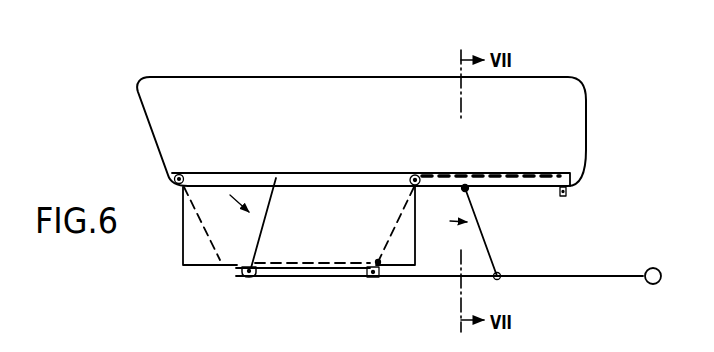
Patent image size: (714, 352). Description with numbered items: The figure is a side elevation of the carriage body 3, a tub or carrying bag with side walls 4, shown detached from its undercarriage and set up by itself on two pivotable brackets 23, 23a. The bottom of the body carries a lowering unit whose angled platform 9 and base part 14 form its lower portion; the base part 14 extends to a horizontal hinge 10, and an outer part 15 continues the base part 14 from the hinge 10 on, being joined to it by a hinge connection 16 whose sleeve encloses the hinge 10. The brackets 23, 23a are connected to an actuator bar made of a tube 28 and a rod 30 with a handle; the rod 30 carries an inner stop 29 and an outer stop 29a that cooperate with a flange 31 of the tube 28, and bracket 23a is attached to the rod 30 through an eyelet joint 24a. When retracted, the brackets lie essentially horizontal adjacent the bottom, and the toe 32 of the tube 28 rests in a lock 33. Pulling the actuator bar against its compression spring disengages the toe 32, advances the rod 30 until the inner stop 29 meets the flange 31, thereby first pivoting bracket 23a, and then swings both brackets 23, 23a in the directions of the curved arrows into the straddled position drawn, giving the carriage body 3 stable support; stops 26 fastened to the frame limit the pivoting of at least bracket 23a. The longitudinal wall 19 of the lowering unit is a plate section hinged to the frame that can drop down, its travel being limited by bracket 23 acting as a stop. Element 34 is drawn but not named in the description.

The carriage body 3 is at (358, 99).
The side walls 4 is at (351, 141).
The angled platform 9 is at (240, 262).
The horizontal hinge 10 is at (313, 226).
The base part 14 is at (390, 250).
The outer part 15 is at (540, 178).
The hinge connection 16 is at (422, 184).
The longitudinal wall 19 is at (336, 228).
The bracket 23 is at (254, 272).
The bracket 23a is at (482, 230).
The eyelet joint 24a is at (502, 274).
The stop 26 is at (469, 191).
The tube 28 is at (292, 277).
The inner stop 29 is at (360, 277).
The outer stop 29a is at (439, 277).
The rod 30 is at (604, 275).
The flange 31 is at (375, 279).
The toe 32 is at (241, 276).
The lock 33 is at (175, 194).
The stop 34 is at (568, 194).